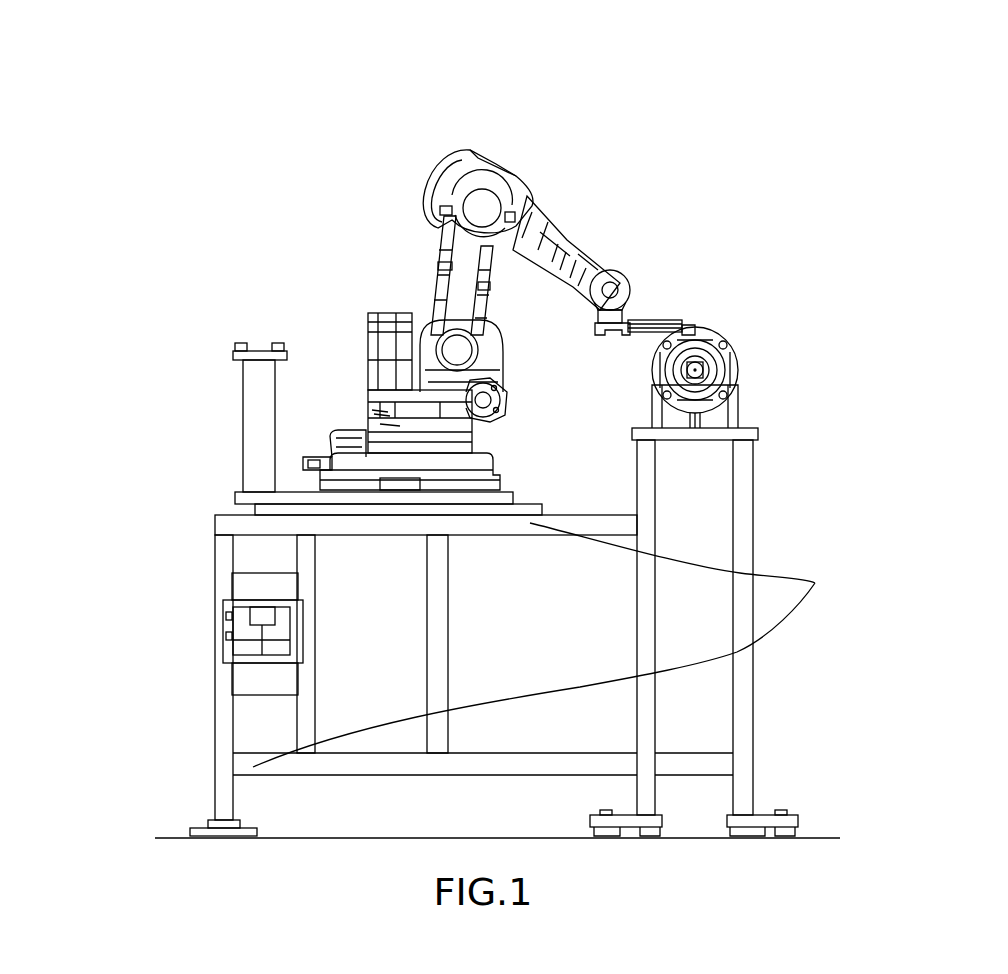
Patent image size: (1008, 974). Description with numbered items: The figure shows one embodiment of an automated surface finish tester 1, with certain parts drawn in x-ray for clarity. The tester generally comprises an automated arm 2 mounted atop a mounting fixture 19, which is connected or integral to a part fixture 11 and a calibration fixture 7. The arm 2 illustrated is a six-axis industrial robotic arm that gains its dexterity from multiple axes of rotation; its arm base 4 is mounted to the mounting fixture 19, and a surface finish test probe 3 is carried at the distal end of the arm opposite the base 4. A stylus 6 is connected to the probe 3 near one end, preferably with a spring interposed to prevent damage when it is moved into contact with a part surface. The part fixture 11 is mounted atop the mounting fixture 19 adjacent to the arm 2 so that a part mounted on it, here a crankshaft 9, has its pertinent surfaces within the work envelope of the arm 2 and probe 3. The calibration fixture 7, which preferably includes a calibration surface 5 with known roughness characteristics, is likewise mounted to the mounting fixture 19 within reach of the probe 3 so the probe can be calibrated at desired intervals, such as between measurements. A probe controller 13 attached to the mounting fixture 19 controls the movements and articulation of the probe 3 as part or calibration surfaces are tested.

The surface finish tester 1 is at (378, 152).
The automated arm 2 is at (522, 187).
The surface finish test probe 3 is at (655, 318).
The arm base 4 is at (342, 435).
The calibration surface 5 is at (260, 345).
The stylus 6 is at (690, 328).
The calibration fixture 7 is at (258, 430).
The crankshaft 9 is at (728, 340).
The part fixture 11 is at (747, 400).
The probe controller 13 is at (257, 625).
The mounting fixture 19 is at (815, 583).